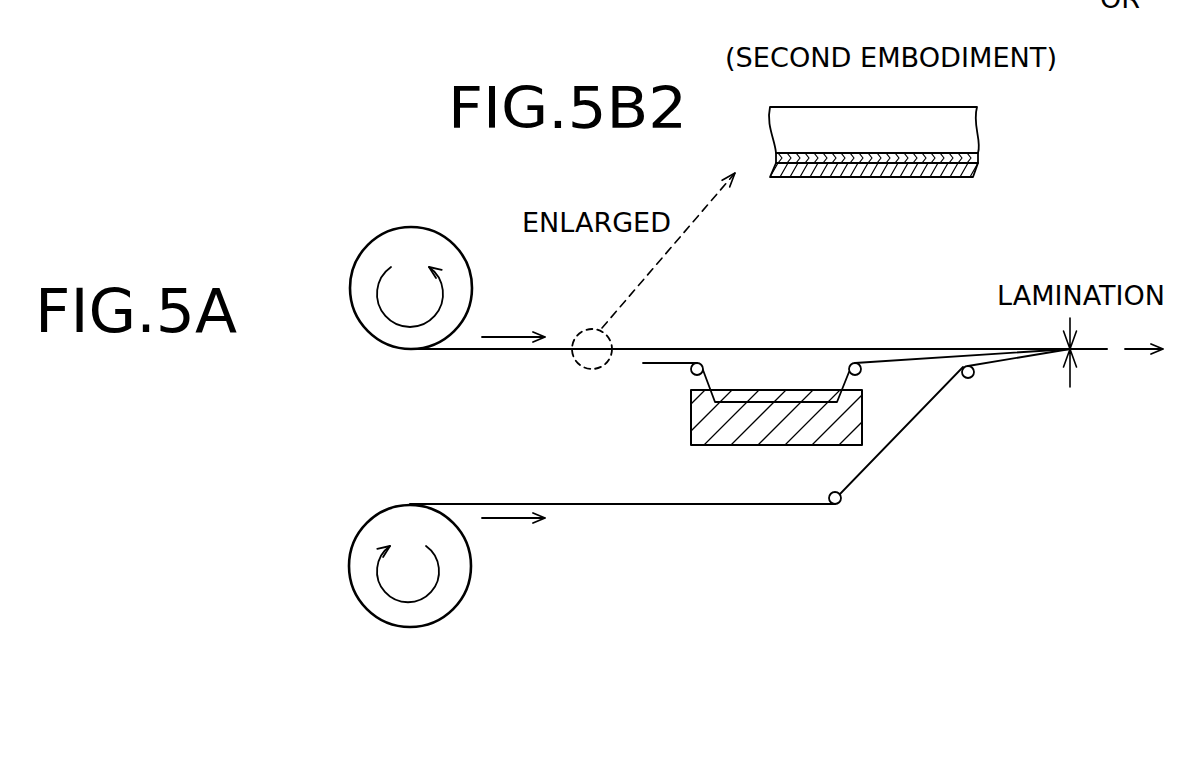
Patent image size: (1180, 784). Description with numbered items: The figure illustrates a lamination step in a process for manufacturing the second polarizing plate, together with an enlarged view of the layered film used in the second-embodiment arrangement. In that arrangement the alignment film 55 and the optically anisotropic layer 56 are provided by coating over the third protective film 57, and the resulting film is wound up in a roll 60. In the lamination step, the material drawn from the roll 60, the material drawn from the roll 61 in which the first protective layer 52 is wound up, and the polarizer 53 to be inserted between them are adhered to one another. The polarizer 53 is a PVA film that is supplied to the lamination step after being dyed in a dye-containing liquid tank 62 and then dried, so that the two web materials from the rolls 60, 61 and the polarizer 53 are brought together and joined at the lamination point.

In FIG. 5A, the first protective layer 52 is at (672, 507).
In FIG. 5A, the polarizer 53 is at (667, 363).
In FIG. 5B2, the alignment film 55 is at (978, 155).
In FIG. 5B2, the optically anisotropic layer 56 is at (975, 170).
In FIG. 5B2, the third protective film 57 is at (970, 125).
In FIG. 5A, the roll 60 is at (428, 242).
In FIG. 5A, the roll 61 is at (443, 603).
In FIG. 5A, the dye-containing liquid tank 62 is at (765, 437).